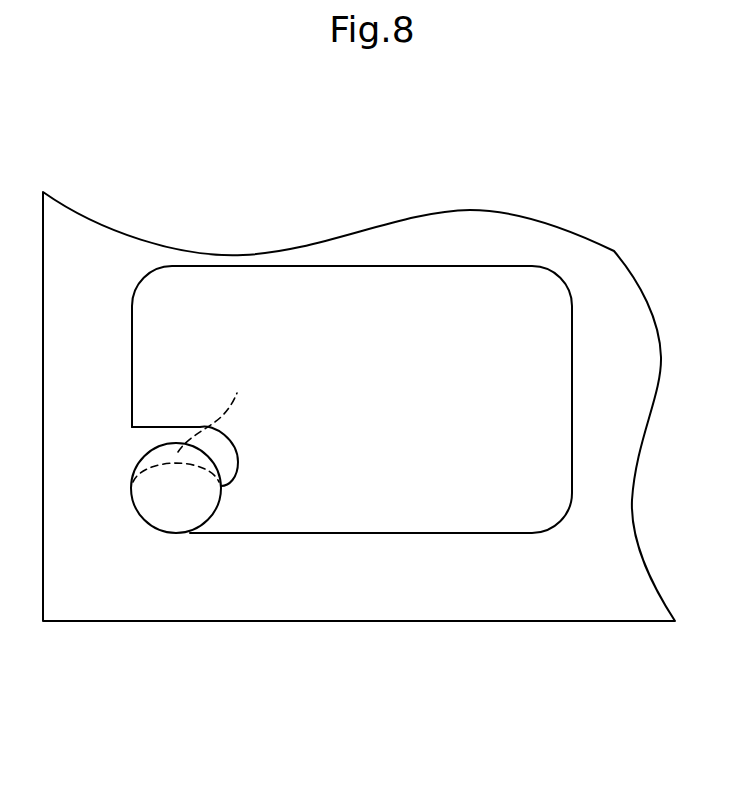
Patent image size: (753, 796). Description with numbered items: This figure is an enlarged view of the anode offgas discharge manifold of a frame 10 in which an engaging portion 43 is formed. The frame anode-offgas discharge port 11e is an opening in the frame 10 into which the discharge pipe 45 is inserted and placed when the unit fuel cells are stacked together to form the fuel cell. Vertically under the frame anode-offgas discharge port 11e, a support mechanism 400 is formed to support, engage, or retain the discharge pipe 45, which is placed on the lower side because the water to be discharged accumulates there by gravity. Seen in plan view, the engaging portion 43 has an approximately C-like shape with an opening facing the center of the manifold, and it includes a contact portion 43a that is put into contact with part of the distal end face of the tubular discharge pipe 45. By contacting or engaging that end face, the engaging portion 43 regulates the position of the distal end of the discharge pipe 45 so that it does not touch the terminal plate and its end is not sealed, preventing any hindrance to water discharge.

The frame 10 is at (342, 573).
The frame anode-offgas discharge port 11e is at (405, 266).
The engaging portion 43 is at (268, 444).
The support mechanism 400 is at (221, 450).
The contact portion 43a is at (217, 413).
The discharge pipe 45 is at (213, 517).